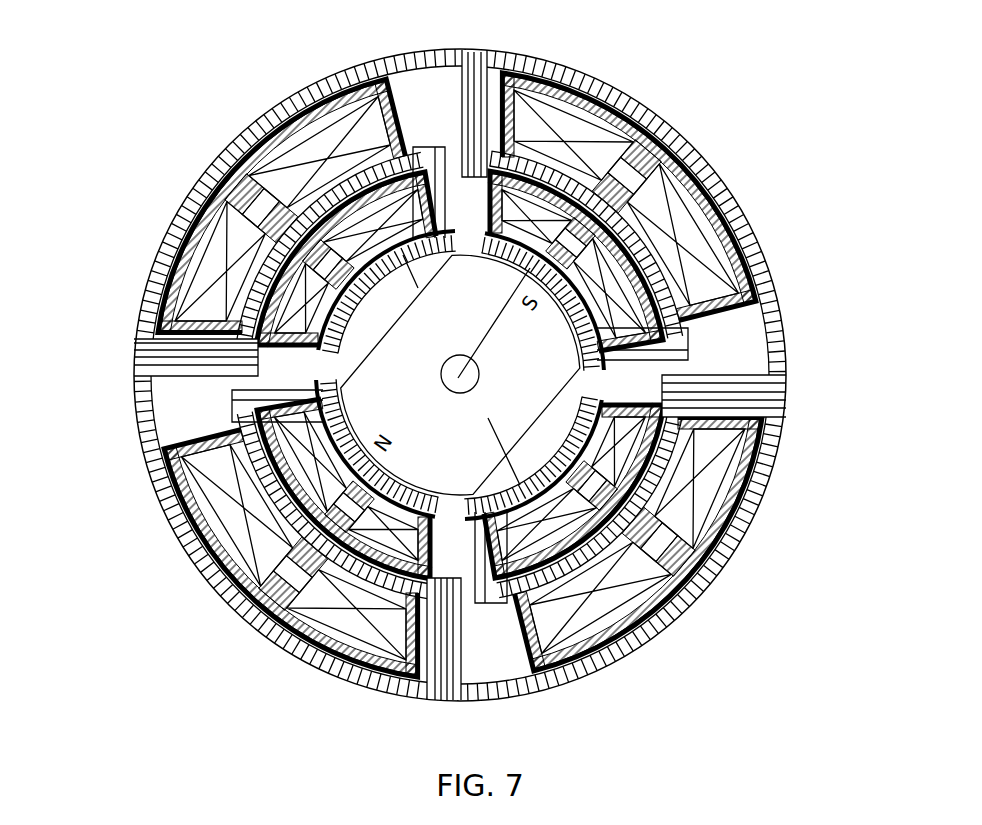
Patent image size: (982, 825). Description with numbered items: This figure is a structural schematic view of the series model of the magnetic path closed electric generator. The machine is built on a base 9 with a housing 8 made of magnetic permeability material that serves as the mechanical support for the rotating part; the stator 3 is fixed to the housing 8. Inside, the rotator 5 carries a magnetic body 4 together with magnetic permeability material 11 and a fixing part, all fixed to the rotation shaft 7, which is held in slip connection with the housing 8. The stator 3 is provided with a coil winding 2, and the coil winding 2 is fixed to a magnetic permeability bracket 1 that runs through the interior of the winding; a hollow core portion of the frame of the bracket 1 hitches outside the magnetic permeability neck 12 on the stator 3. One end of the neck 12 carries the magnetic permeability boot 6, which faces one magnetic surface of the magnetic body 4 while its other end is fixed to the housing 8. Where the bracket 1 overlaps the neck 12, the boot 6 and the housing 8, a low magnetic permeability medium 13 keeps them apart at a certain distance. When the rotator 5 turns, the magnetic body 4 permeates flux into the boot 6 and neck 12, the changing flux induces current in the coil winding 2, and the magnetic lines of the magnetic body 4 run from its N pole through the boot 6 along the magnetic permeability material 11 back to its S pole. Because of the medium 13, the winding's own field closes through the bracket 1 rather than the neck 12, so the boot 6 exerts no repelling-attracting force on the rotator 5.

The magnetic permeability bracket 1 is at (205, 533).
The coil winding 2 is at (343, 615).
The stator 3 is at (393, 668).
The magnetic body 4 is at (590, 648).
The rotator 5 is at (347, 153).
The magnetic permeability boot 6 is at (697, 602).
The rotation shaft 7 is at (615, 137).
The housing 8 is at (703, 157).
The base 9 is at (747, 524).
The magnetic permeability material 11 is at (230, 600).
The magnetic permeability neck 12 is at (240, 428).
The low magnetic permeability medium 13 is at (177, 220).